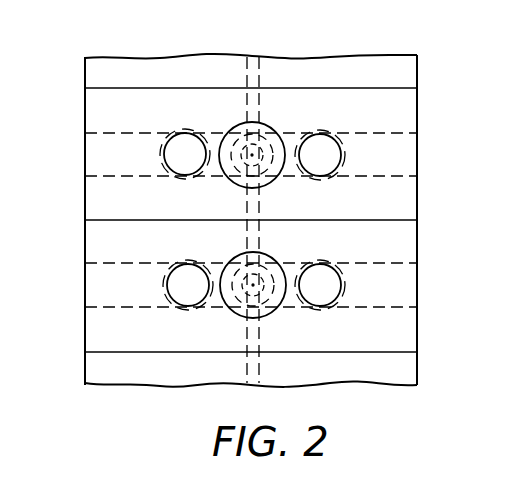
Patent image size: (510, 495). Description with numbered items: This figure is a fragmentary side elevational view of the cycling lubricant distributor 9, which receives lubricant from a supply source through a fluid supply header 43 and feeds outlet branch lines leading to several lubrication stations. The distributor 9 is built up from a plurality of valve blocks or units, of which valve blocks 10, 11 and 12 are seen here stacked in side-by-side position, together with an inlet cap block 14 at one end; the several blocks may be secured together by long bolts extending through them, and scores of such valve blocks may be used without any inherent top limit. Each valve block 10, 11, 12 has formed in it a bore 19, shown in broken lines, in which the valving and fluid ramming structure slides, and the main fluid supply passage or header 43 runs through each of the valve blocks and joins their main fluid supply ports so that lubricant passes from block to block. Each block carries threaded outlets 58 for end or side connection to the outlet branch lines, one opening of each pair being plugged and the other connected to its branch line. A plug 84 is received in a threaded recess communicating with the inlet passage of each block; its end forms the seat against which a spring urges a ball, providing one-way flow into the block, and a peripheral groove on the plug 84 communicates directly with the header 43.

The cycling lubricant distributor 9 is at (83, 161).
The valve block 10 is at (408, 112).
The valve block 11 is at (402, 244).
The valve block 12 is at (405, 369).
The inlet cap block 14 is at (408, 76).
The bore 19 is at (393, 176).
The fluid supply header 43 is at (255, 57).
The threaded outlet 58 is at (184, 134).
The plug 84 is at (262, 138).